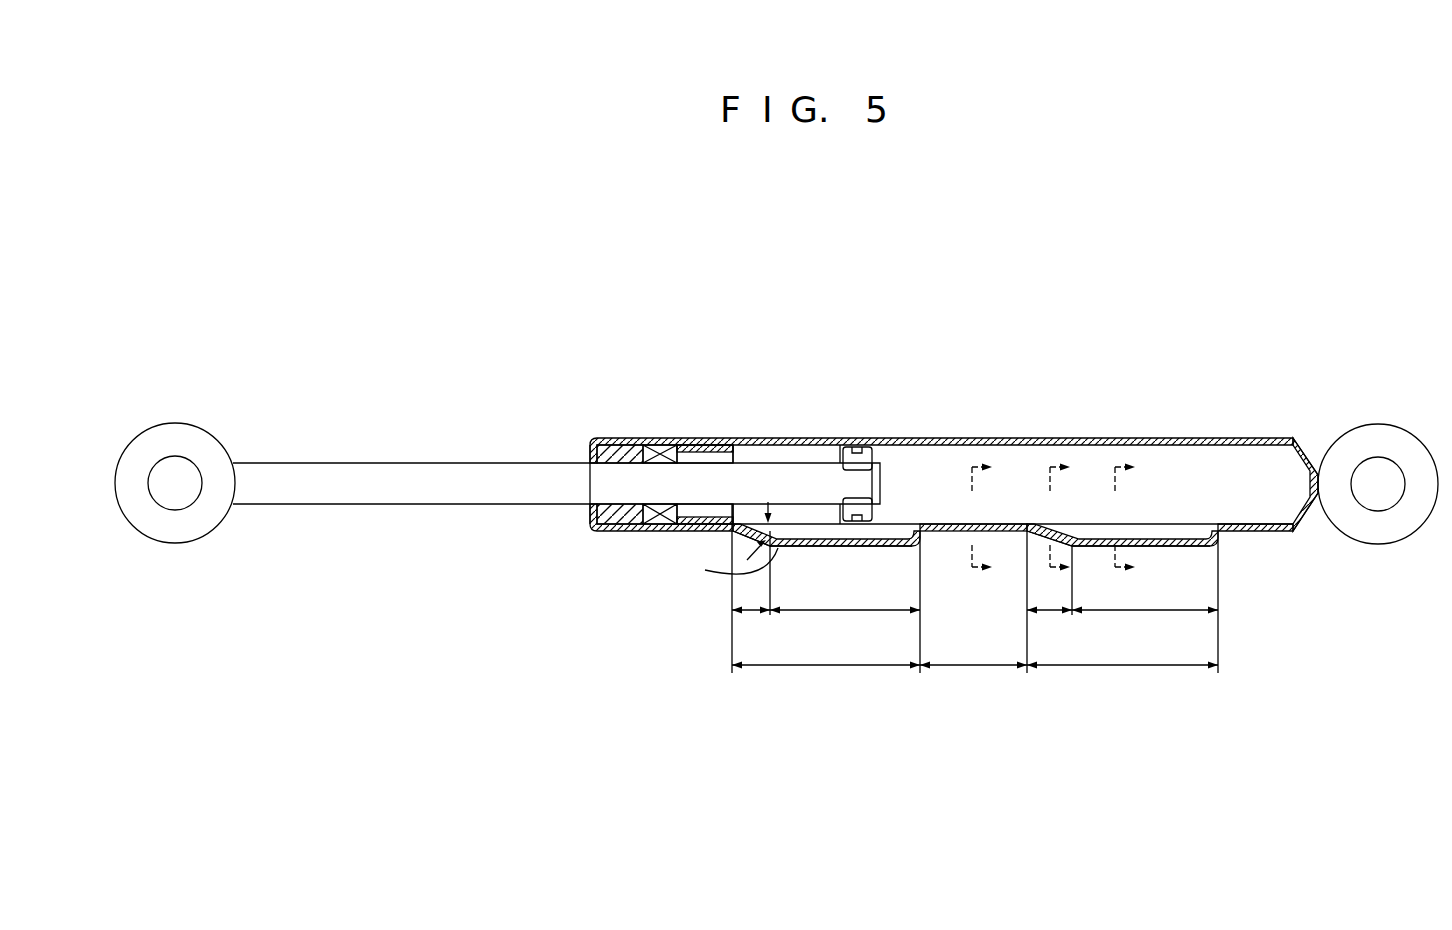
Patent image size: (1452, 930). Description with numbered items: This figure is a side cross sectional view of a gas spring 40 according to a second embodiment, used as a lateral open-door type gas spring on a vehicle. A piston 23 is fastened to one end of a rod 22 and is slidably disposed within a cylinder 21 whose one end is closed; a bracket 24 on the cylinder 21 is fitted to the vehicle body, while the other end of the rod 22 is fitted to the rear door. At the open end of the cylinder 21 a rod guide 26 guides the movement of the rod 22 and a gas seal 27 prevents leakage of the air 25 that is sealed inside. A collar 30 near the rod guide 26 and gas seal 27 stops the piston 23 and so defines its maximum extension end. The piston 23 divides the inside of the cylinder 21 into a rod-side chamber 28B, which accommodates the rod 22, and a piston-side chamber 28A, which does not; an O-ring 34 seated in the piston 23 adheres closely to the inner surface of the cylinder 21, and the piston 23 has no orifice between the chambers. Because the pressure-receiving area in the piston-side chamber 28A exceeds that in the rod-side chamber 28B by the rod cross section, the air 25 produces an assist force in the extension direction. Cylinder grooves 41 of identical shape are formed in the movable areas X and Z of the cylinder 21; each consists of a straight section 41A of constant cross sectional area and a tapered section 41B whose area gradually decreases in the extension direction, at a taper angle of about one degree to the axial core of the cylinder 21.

The cylinder 21 is at (1270, 438).
The rod 22 is at (412, 463).
The piston 23 is at (874, 452).
The bracket 24 is at (1373, 424).
The air 25 is at (1262, 513).
The rod guide 26 is at (612, 445).
The gas seal 27 is at (657, 525).
The piston-side chamber 28A is at (1173, 463).
The rod-side chamber 28B is at (797, 450).
The collar 30 is at (697, 445).
The O-ring 34 is at (858, 438).
The gas spring 40 is at (608, 291).
The cylinder grooves 41 is at (900, 517).
The straight section 41A is at (833, 612).
The tapered section 41B is at (755, 614).